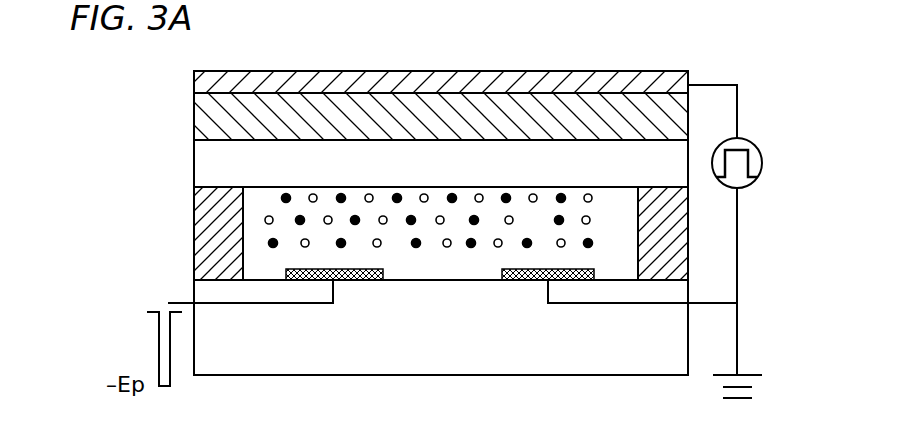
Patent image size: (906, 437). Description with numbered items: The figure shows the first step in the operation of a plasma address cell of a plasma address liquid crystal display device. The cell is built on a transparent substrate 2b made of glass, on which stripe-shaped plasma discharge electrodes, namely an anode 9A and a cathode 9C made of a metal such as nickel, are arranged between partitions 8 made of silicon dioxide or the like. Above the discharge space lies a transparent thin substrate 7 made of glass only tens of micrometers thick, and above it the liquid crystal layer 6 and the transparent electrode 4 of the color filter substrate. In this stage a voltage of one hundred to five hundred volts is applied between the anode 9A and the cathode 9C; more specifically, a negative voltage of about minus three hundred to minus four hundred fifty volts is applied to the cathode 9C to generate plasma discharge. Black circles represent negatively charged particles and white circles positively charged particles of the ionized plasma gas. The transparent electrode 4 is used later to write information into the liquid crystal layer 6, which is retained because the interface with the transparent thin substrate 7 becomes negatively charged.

The transparent electrode 4 is at (653, 80).
The liquid crystal layer 6 is at (207, 117).
The transparent thin substrate 7 is at (409, 163).
The partition 8 is at (768, 242).
The cathode 9C is at (315, 280).
The anode 9A is at (575, 280).
The transparent substrate 2b is at (465, 350).